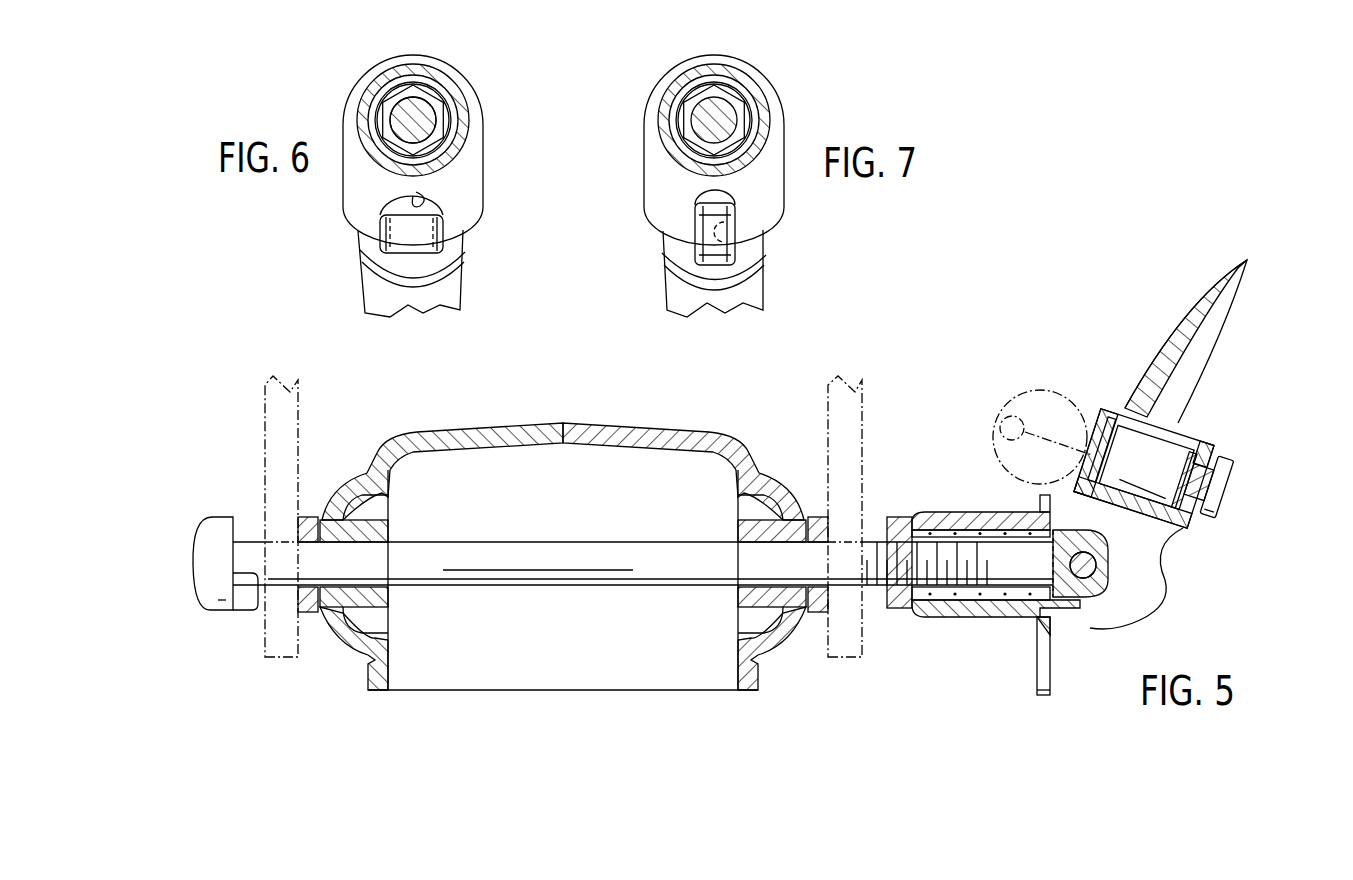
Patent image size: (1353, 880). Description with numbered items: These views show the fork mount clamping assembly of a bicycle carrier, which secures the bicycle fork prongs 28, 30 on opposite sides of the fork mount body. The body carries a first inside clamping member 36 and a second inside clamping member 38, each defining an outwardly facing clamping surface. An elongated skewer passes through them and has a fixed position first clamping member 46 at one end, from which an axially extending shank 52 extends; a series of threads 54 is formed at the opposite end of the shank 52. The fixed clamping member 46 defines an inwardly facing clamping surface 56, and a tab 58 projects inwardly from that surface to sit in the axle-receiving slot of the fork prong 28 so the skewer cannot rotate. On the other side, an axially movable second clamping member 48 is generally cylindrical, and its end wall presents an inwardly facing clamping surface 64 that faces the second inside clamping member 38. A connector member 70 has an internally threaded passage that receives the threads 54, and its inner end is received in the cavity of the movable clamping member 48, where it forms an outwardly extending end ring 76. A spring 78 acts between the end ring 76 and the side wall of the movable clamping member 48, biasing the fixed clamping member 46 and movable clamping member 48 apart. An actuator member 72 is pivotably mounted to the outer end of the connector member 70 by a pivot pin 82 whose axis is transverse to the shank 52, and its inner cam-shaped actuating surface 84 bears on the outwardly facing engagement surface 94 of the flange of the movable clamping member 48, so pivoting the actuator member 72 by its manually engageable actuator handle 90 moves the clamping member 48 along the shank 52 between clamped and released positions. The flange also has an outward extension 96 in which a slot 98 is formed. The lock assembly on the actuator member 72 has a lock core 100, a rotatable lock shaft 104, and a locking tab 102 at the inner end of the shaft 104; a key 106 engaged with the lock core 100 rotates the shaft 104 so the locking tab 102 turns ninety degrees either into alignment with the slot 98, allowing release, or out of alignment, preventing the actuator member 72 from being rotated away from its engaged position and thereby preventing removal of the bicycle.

In FIG. 5, the fork prong 28 is at (262, 414).
In FIG. 5, the fork prong 30 is at (864, 410).
In FIG. 5, the first inside clamping member 36 is at (310, 613).
In FIG. 5, the second inside clamping member 38 is at (817, 612).
In FIG. 5, the fixed position first clamping member 46 is at (211, 557).
In FIG. 6, the axially movable second clamping member 48 is at (387, 67).
In FIG. 5, the axially movable second clamping member 48 is at (940, 624).
In FIG. 6, the shank 52 is at (447, 138).
In FIG. 7, the shank 52 is at (757, 83).
In FIG. 5, the shank 52 is at (610, 587).
In FIG. 5, the threads 54 is at (873, 587).
In FIG. 5, the inwardly facing clamping surface 56 is at (236, 527).
In FIG. 5, the tab 58 is at (245, 598).
In FIG. 5, the inwardly facing clamping surface 64 is at (893, 525).
In FIG. 6, the connector member 70 is at (433, 87).
In FIG. 5, the connector member 70 is at (1127, 459).
In FIG. 6, the actuator member 72 is at (474, 288).
In FIG. 7, the actuator member 72 is at (770, 308).
In FIG. 5, the end ring 76 is at (920, 515).
In FIG. 5, the spring 78 is at (1007, 612).
In FIG. 5, the pivot pin 82 is at (1106, 572).
In FIG. 5, the cam-shaped actuating surface 84 is at (1106, 631).
In FIG. 5, the actuator handle 90 is at (1213, 318).
In FIG. 5, the outwardly facing engagement surface 94 is at (1053, 623).
In FIG. 6, the outward extension 96 is at (360, 203).
In FIG. 7, the outward extension 96 is at (768, 203).
In FIG. 5, the outward extension 96 is at (1052, 675).
In FIG. 6, the slot 98 is at (413, 191).
In FIG. 7, the slot 98 is at (745, 235).
In FIG. 5, the slot 98 is at (1043, 692).
In FIG. 7, the lock core 100 is at (738, 272).
In FIG. 6, the locking tab 102 is at (413, 253).
In FIG. 7, the locking tab 102 is at (713, 278).
In FIG. 5, the locking tab 102 is at (1230, 492).
In FIG. 5, the lock shaft 104 is at (1193, 500).
In FIG. 5, the key 106 is at (1031, 390).